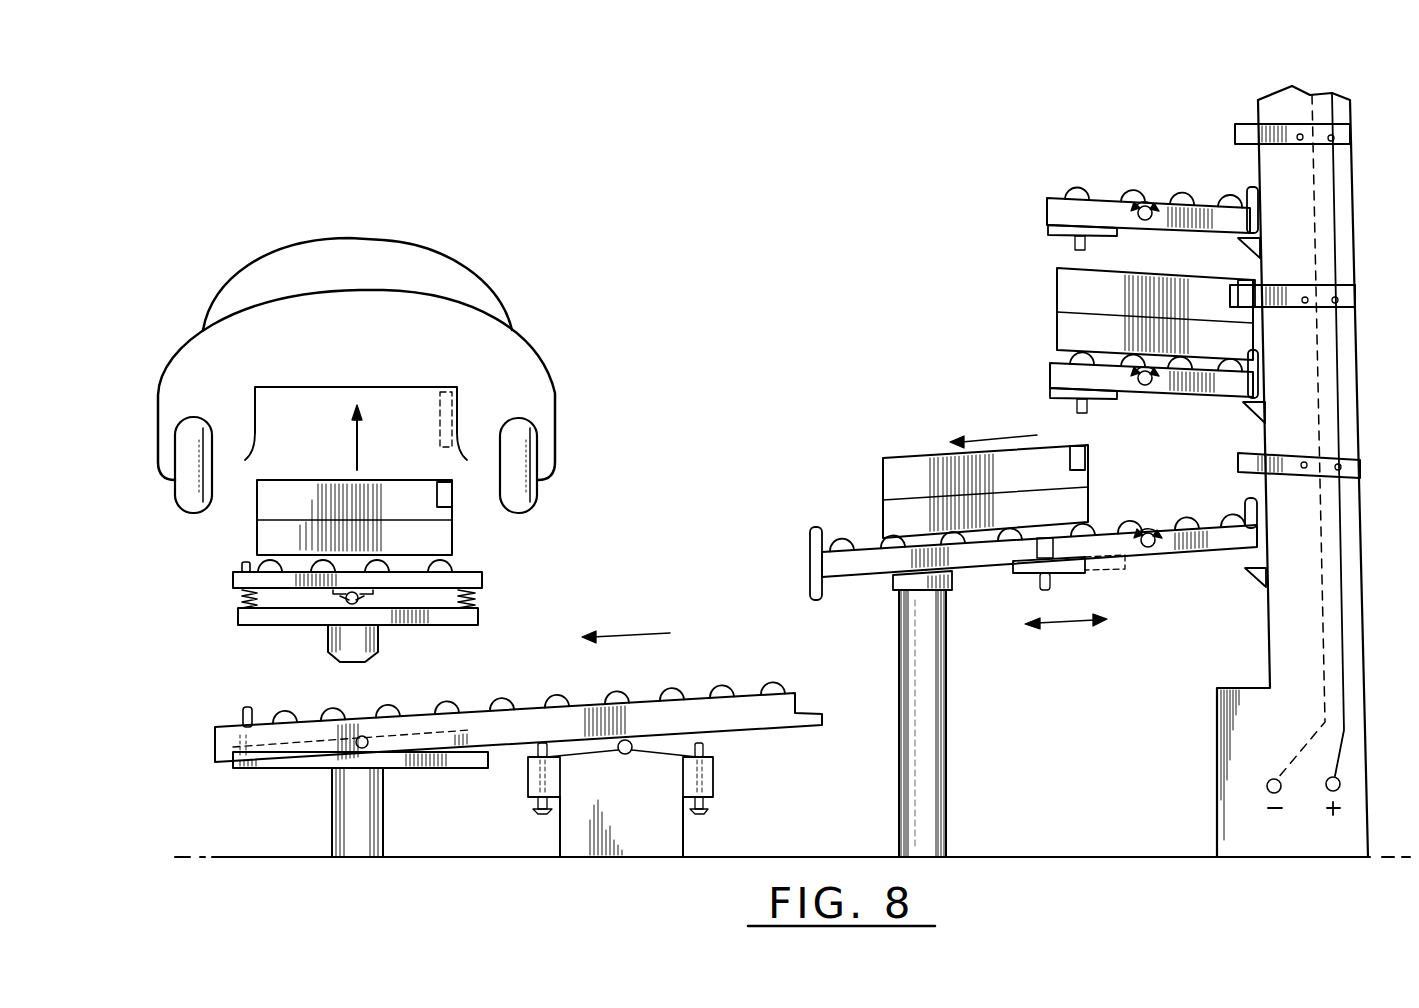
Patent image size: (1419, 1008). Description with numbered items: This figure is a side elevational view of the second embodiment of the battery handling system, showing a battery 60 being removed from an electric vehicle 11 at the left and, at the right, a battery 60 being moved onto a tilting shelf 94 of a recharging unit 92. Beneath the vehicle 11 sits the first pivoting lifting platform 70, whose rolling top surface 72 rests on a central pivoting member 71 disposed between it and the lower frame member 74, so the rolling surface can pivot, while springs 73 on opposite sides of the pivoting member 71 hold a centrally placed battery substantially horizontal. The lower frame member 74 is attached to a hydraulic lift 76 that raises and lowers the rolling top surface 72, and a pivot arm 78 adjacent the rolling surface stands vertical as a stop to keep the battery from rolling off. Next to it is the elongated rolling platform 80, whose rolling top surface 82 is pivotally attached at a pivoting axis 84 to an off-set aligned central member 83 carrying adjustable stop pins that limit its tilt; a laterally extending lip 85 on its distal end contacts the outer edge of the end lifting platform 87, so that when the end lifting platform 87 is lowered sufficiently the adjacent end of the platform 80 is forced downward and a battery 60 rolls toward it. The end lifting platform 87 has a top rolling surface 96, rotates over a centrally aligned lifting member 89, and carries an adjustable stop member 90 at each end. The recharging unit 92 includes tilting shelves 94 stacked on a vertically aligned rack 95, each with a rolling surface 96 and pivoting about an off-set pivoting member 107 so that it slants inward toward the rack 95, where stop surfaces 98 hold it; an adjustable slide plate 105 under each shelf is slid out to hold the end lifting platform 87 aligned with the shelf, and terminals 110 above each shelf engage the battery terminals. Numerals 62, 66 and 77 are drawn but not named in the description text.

The electric vehicle 11 is at (512, 284).
The battery 60 is at (272, 498).
The battery connector 62 is at (443, 493).
The battery compartment 66 is at (258, 456).
The first pivoting lifting platform 70 is at (510, 573).
The central pivoting member 71 is at (370, 603).
The rolling top surface 72 is at (462, 572).
The springs 73 is at (242, 598).
The lower frame member 74 is at (468, 623).
The hydraulic lift 76 is at (338, 638).
The tilt cylinders 77 is at (538, 812).
The pivot arm 78 is at (242, 580).
The elongated rolling platform 80 is at (730, 545).
The rolling top surface 82 is at (590, 707).
The central member 83 is at (645, 858).
The pivoting axis 84 is at (630, 753).
The laterally extending lip 85 is at (813, 725).
The end lifting platform 87 is at (866, 648).
The centrally aligned lifting member 89 is at (940, 760).
The stop member 90 is at (818, 548).
The recharging unit 92 is at (1228, 785).
The tilting shelf 94 is at (1055, 190).
The rack 95 is at (1246, 104).
The top rolling surface 96 is at (720, 685).
The stop surfaces 98 is at (1260, 245).
The adjustable slide plate 105 is at (1025, 572).
The off-set pivoting member 107 is at (1152, 550).
The terminals 110 is at (1342, 140).